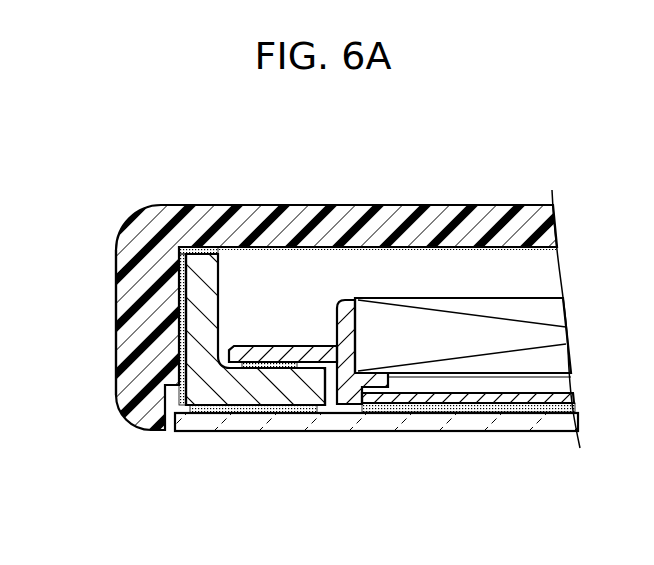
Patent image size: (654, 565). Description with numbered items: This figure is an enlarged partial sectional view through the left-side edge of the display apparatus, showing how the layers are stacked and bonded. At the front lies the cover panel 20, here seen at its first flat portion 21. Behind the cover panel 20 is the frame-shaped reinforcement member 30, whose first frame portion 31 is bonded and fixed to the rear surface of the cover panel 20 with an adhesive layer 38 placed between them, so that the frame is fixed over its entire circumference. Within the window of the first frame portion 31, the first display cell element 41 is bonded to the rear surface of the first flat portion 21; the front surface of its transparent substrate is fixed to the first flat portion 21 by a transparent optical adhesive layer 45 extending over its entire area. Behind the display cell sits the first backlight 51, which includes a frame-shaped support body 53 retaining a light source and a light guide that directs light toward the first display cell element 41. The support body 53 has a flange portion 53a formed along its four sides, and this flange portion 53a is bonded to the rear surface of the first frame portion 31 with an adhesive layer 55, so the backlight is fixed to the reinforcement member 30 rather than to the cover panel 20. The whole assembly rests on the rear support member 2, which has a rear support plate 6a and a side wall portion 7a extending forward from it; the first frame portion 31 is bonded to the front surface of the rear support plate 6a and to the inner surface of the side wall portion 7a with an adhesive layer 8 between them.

The rear support member 2 is at (321, 287).
The rear support plate 6a is at (448, 246).
The side wall portion 7a is at (140, 262).
The adhesive layer 8 is at (177, 300).
The cover panel 20 is at (380, 454).
The first flat portion 21 is at (342, 436).
The reinforcement member 30 is at (238, 320).
The first frame portion 31 is at (203, 355).
The adhesive layer 38 is at (262, 412).
The first display cell element 41 is at (517, 383).
The transparent optical adhesive layer 45 is at (433, 413).
The first backlight 51 is at (534, 288).
The support body 53 is at (337, 312).
The flange portion 53a is at (297, 346).
The adhesive layer 55 is at (200, 413).